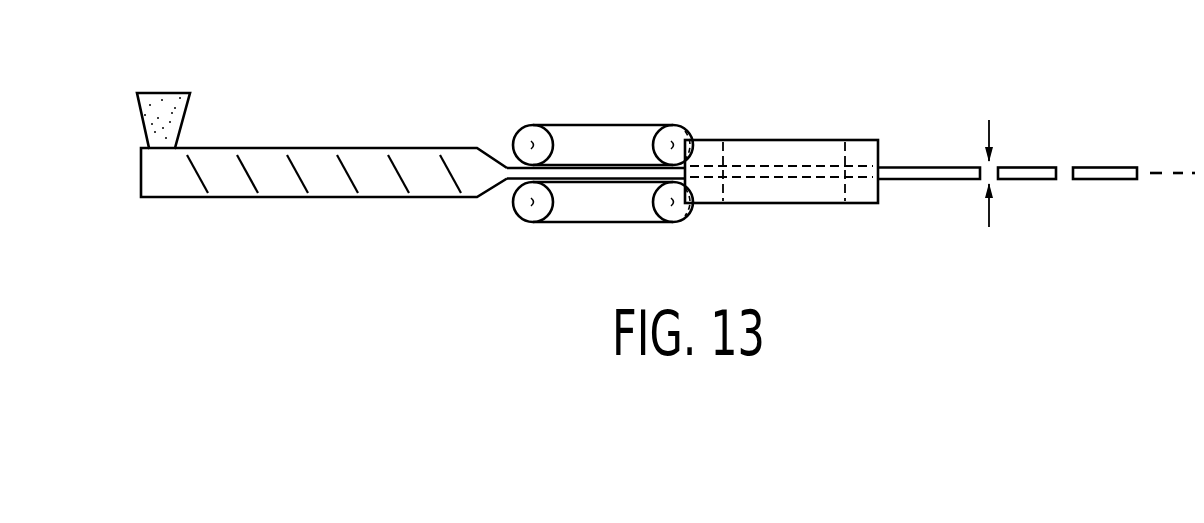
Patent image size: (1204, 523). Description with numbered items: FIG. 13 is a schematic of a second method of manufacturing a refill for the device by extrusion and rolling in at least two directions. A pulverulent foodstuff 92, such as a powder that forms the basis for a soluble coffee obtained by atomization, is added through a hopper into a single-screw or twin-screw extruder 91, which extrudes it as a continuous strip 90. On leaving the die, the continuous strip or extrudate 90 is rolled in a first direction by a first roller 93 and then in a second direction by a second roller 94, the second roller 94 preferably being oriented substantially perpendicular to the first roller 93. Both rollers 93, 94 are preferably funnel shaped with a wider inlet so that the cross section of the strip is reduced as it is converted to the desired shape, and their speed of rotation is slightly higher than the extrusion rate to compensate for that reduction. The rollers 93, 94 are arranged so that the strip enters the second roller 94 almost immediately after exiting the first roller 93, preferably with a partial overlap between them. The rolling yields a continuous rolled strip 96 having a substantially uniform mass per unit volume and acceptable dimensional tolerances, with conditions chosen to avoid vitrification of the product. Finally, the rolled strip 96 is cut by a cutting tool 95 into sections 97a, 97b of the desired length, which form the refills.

The continuous strip 90 is at (510, 182).
The extruder 91 is at (263, 199).
The pulverulent foodstuff 92 is at (183, 92).
The first roller 93 is at (589, 125).
The second roller 94 is at (810, 153).
The cutting tool 95 is at (992, 132).
The continuous rolled strip 96 is at (918, 172).
The section 97a is at (1030, 165).
The section 97b is at (1117, 167).